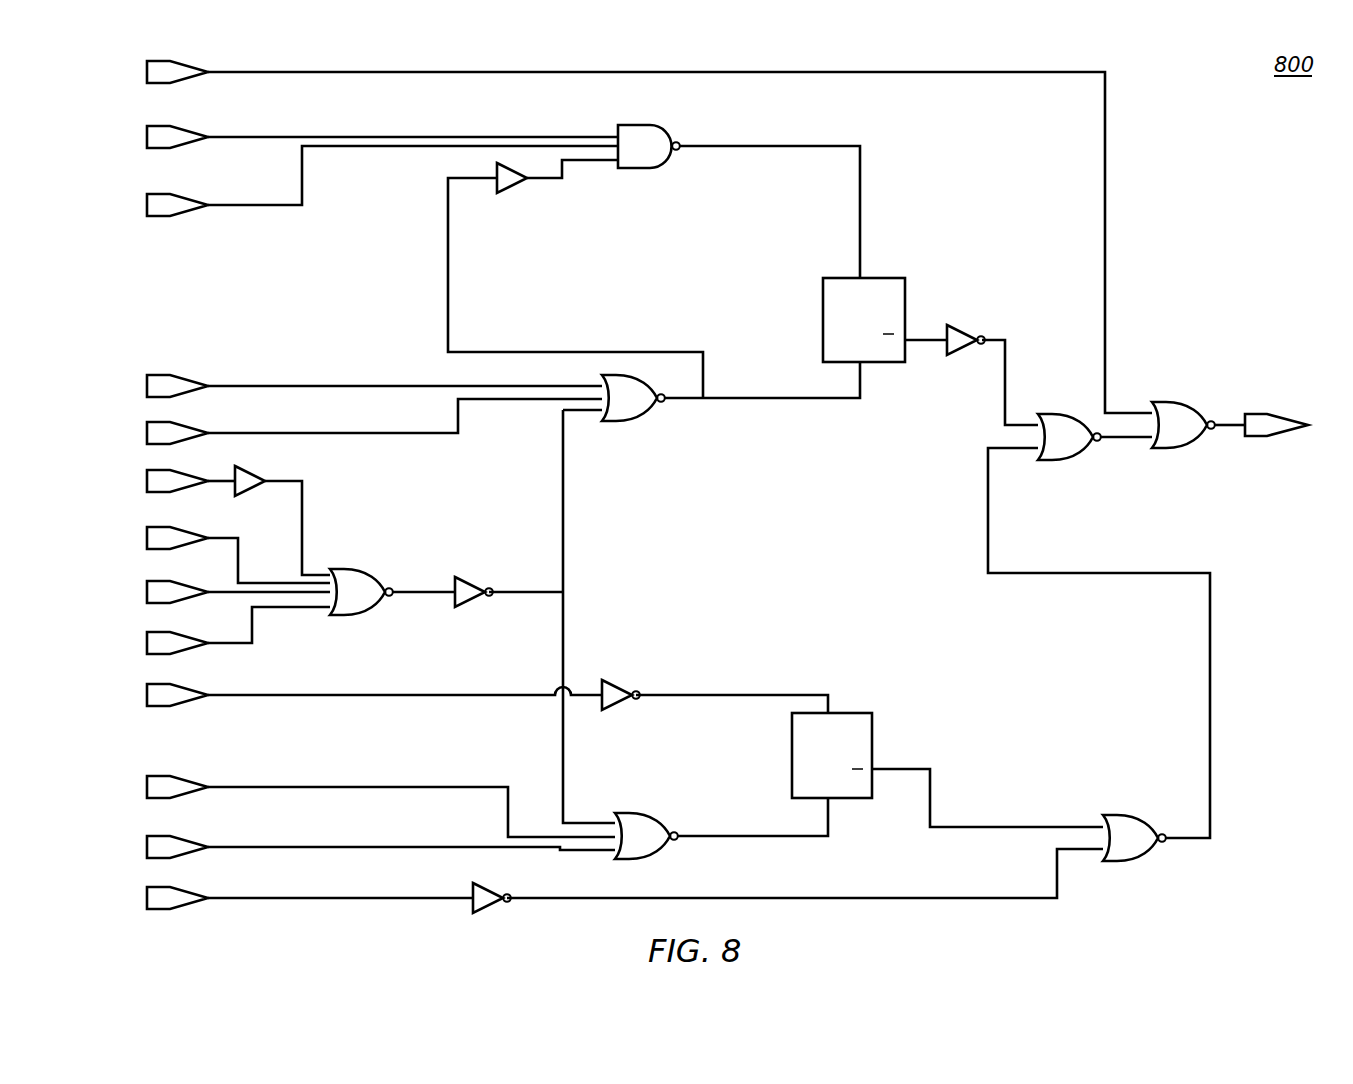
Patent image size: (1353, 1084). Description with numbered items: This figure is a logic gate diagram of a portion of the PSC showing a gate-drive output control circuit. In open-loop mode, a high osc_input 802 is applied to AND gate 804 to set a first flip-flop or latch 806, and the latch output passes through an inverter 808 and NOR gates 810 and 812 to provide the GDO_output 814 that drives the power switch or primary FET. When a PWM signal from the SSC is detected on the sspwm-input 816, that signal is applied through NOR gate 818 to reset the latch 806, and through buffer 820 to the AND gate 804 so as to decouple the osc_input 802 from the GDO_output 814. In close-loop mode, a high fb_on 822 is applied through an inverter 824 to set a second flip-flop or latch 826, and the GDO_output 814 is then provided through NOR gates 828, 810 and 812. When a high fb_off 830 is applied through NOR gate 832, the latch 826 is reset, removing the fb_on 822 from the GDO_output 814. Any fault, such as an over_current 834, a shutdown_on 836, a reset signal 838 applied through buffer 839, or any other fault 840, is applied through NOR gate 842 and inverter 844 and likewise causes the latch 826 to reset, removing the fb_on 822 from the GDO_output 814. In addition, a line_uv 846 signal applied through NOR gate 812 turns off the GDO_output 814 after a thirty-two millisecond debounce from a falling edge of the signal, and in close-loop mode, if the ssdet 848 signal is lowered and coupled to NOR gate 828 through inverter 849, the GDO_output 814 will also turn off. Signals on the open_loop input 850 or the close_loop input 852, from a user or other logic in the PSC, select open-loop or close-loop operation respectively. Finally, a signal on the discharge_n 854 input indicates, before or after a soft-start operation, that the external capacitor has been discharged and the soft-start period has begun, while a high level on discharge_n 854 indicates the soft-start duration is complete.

The osc_input 802 is at (147, 137).
The AND gate 804 is at (643, 170).
The flip-flop or latch 806 is at (823, 298).
The inverter 808 is at (968, 330).
The NOR gate 810 is at (1058, 461).
The NOR gate 812 is at (1170, 449).
The GDO_output 814 is at (1260, 438).
The sspwm-input 816 is at (147, 386).
The NOR gate 818 is at (630, 421).
The buffer 820 is at (510, 193).
The fb_on 822 is at (147, 695).
The inverter 824 is at (614, 682).
The second flip-flop or latch 826 is at (792, 754).
The NOR gate 828 is at (1124, 816).
The fb_off 830 is at (147, 787).
The NOR gate 832 is at (635, 814).
The over_current 834 is at (147, 538).
The shutdown_on 836 is at (147, 592).
The reset signal 838 is at (147, 481).
The buffer 839 is at (255, 496).
The fault 840 is at (147, 643).
The NOR gate 842 is at (360, 615).
The inverter 844 is at (470, 606).
The line_uv 846 is at (147, 72).
The ssdet 848 is at (147, 898).
The inverter 849 is at (488, 886).
The open_loop input 850 is at (147, 847).
The close_loop input 852 is at (147, 433).
The discharge_n 854 is at (147, 205).